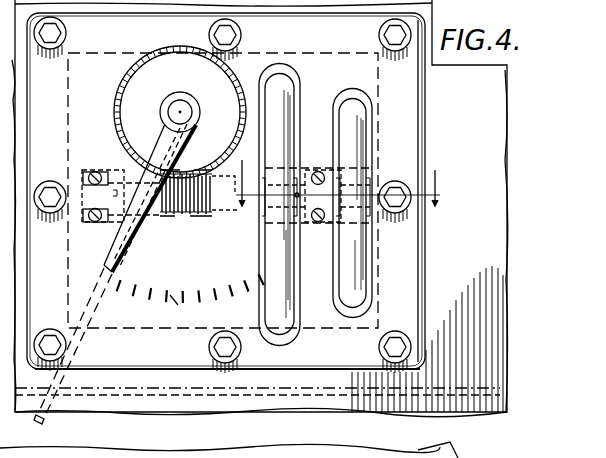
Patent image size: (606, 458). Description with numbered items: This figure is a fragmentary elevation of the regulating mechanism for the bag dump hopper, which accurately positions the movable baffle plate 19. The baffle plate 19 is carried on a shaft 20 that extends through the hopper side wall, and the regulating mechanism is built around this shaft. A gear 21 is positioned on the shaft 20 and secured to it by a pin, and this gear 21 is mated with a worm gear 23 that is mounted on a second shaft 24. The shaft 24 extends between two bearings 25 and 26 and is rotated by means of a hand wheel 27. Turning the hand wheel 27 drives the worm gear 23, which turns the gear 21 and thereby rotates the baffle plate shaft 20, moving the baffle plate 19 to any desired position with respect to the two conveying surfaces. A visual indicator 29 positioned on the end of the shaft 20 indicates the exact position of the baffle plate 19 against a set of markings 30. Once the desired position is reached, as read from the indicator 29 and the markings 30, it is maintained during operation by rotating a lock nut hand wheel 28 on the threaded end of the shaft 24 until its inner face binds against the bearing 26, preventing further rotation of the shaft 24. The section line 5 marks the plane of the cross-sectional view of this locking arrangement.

The section line 5- 5 is at (336, 196).
The movable baffle plate 19 is at (93, 318).
The shaft 20 is at (180, 100).
The gear 21 is at (174, 48).
The worm gear 23 is at (172, 218).
The shaft 24 is at (213, 222).
The bearing 25 is at (88, 172).
The bearing 26 is at (322, 170).
The hand wheel 27 is at (280, 326).
The lock nut hand wheel 28 is at (350, 297).
The visual indicator 29 is at (131, 240).
The markings 30 is at (190, 301).